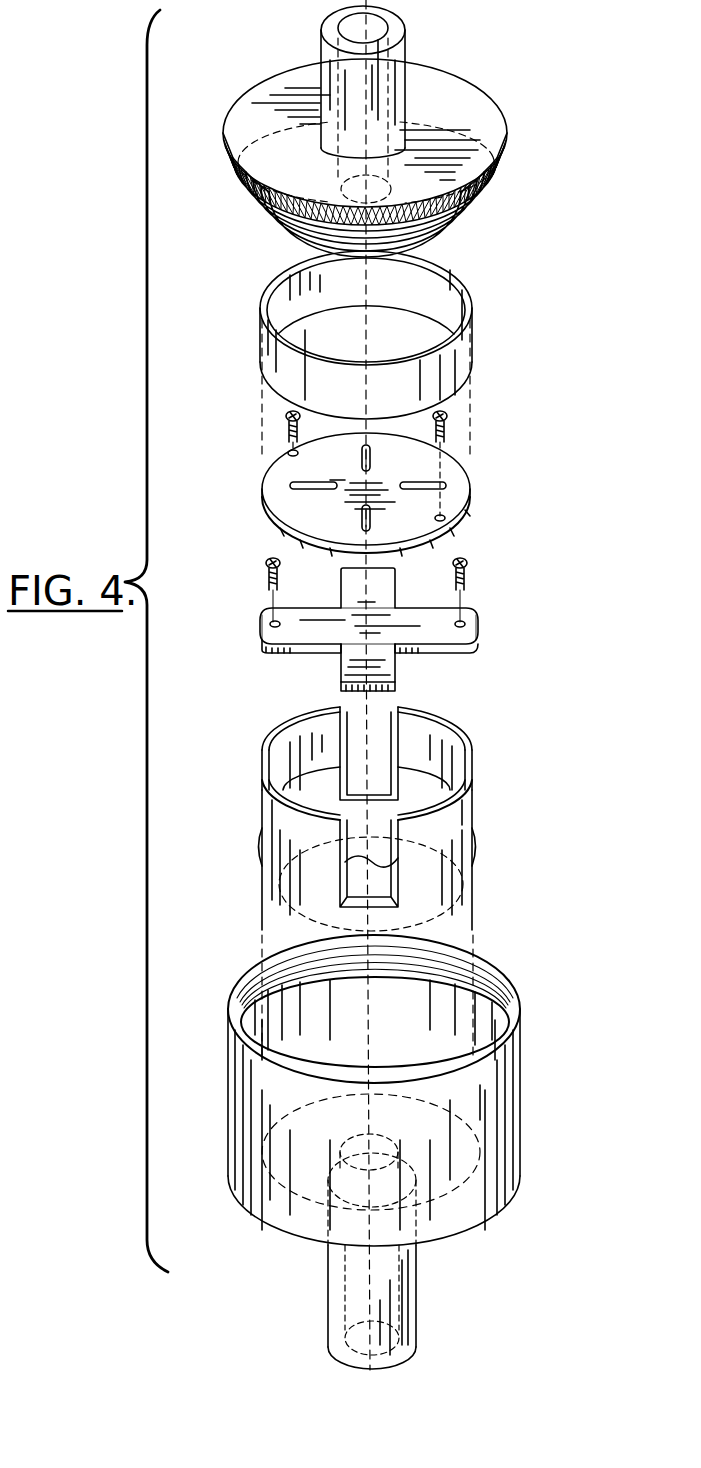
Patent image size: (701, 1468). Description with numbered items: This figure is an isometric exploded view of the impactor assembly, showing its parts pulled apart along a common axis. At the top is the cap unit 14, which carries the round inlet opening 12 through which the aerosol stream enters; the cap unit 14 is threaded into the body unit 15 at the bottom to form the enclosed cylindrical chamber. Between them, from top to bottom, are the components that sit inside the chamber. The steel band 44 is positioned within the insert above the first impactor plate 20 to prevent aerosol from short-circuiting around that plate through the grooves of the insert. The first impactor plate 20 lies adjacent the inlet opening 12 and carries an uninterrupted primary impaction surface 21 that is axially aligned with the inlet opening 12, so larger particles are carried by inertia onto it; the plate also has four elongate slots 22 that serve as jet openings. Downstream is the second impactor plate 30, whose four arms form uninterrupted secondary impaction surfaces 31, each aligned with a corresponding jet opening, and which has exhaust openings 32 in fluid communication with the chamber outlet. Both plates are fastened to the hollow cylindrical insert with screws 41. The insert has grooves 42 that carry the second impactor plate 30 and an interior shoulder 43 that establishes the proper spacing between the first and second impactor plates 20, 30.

The inlet opening 12 is at (380, 30).
The cap unit 14 is at (508, 123).
The steel band 44 is at (472, 326).
The screws 41 is at (287, 423).
The first impactor plate 20 is at (470, 492).
The primary impaction surface 21 is at (368, 485).
The elongate slots 22 is at (361, 458).
The second impactor plate 30 is at (478, 629).
The secondary impaction surface 31 is at (310, 614).
The exhaust openings 32 is at (423, 586).
The grooves 42 is at (377, 718).
The shoulder 43 is at (320, 778).
The body unit 15 is at (512, 1190).